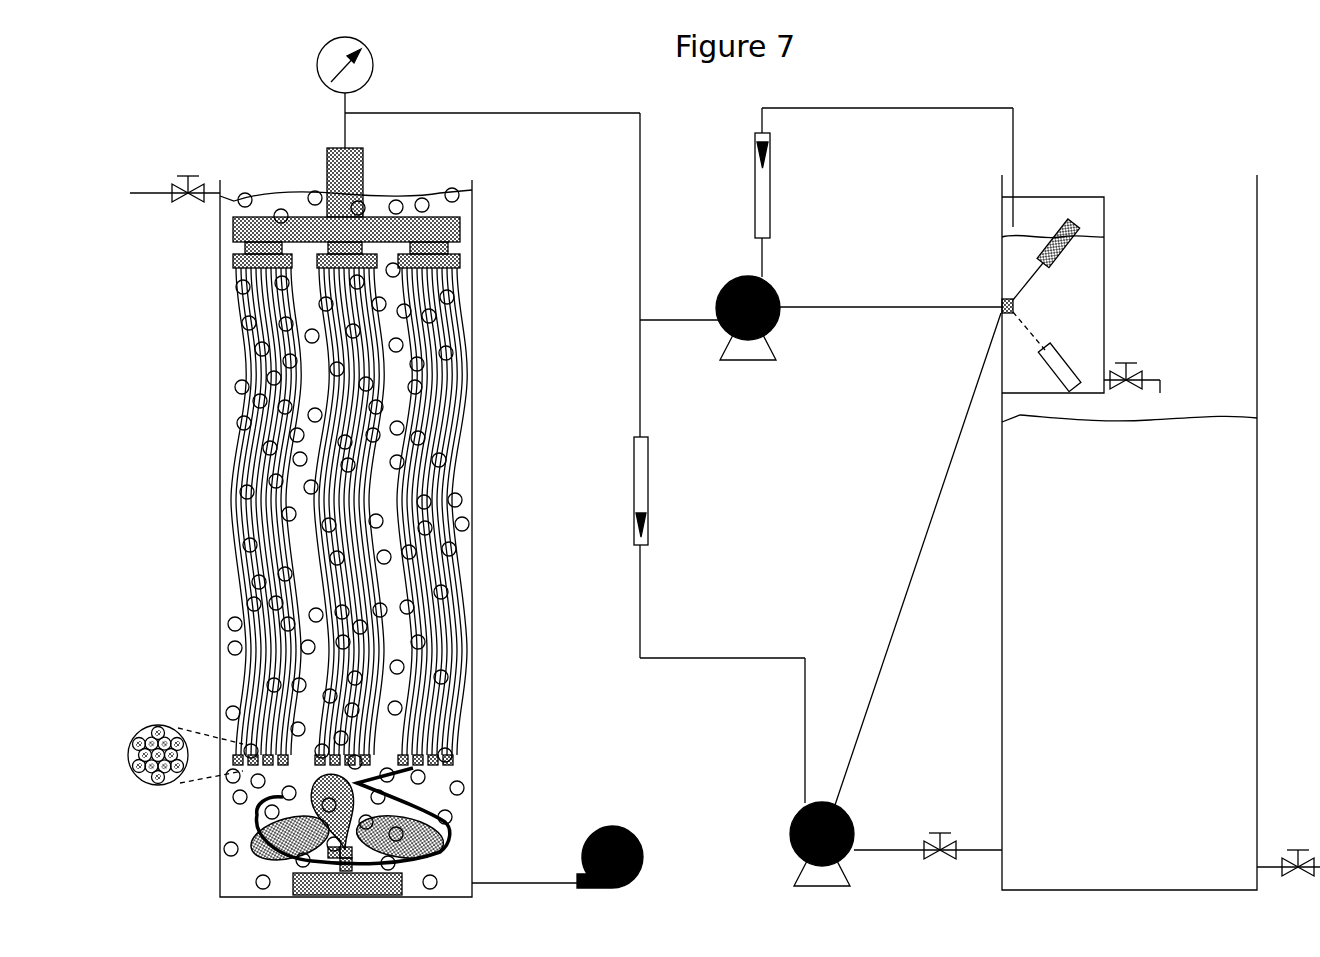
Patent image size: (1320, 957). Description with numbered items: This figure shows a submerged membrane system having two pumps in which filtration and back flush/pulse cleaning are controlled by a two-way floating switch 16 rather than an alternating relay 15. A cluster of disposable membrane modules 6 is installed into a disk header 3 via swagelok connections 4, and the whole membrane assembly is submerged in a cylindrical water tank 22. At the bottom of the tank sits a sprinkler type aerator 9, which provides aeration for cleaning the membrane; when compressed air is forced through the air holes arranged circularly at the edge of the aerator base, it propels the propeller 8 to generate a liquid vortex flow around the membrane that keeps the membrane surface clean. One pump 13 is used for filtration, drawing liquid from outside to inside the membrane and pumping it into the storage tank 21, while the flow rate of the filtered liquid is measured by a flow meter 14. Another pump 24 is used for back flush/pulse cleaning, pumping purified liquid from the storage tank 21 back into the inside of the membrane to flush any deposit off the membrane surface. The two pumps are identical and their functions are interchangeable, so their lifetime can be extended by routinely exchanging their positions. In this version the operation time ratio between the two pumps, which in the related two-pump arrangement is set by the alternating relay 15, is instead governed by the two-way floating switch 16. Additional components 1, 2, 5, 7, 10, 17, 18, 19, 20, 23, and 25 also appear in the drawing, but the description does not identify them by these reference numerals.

The pressure gauge 1 is at (340, 59).
The permeate outlet header 2 is at (345, 182).
The disk header 3 is at (346, 231).
The swagelok connection 4 is at (429, 256).
The fiber bundle header 5 is at (262, 260).
The disposable membrane modules 6 is at (366, 535).
The fiber bundle cross-section 7 is at (185, 740).
The propeller 8 is at (348, 818).
The sprinkler type aerator 9 is at (347, 873).
The air blower 10 is at (610, 840).
The pump 13 is at (760, 318).
The flow meter 14 is at (785, 185).
The alternating relay 15 is at (1000, 306).
The two-way floating switch 16 is at (1068, 297).
The valve 17 is at (1135, 364).
The drain valve 18 is at (1298, 843).
The feed valve 19 is at (186, 175).
The air bubble 20 is at (232, 643).
The storage tank 21 is at (1129, 532).
The cylindrical water tank 22 is at (219, 448).
The valve 23 is at (942, 827).
The pump 24 is at (885, 844).
The flow meter 25 is at (662, 491).